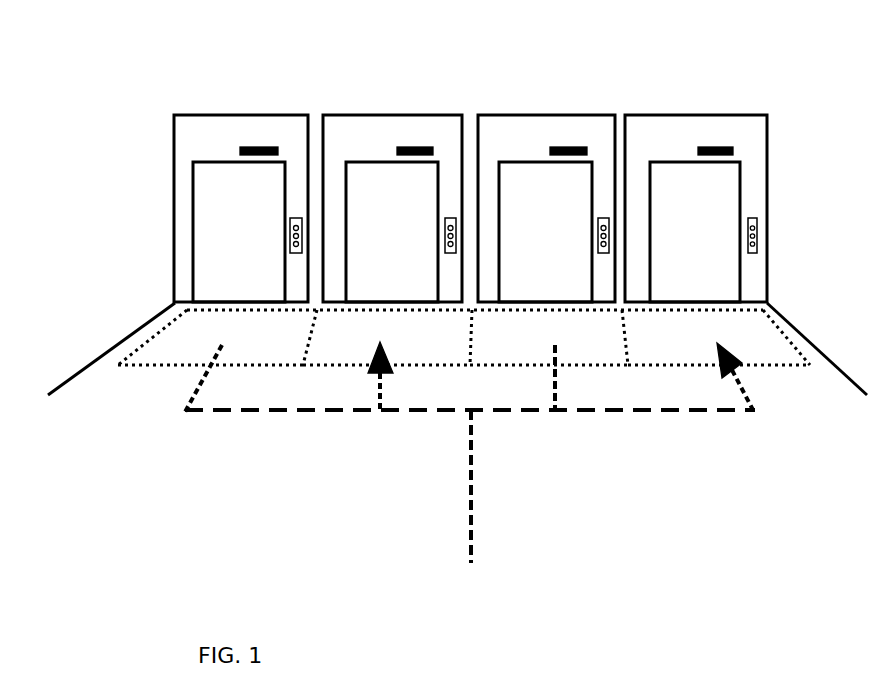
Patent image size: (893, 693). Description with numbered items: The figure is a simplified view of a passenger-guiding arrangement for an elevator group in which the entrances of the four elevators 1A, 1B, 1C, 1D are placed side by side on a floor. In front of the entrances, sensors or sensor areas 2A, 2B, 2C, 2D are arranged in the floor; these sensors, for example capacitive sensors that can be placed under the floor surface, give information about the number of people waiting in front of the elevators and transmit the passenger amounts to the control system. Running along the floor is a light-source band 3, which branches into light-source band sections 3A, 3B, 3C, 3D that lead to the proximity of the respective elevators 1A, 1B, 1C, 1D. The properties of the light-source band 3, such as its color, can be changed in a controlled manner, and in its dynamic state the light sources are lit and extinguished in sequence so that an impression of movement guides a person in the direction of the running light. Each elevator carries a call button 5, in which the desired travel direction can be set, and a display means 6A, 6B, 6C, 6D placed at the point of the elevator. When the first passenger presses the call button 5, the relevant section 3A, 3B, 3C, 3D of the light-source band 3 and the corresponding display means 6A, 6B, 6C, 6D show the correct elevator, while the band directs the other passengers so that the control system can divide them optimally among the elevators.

The elevator 1A is at (238, 178).
The elevator 1B is at (378, 170).
The elevator 1C is at (533, 172).
The elevator 1D is at (682, 172).
The sensor 2A is at (170, 357).
The sensor 2B is at (333, 357).
The sensor 2C is at (492, 355).
The sensor 2D is at (675, 355).
The light-source band 3 is at (471, 470).
The light-source band section 3A is at (203, 378).
The light-source band section 3B is at (382, 385).
The light-source band section 3C is at (560, 383).
The light-source band section 3D is at (745, 392).
The call button 5 is at (302, 248).
The display means 6A is at (257, 147).
The display means 6B is at (412, 147).
The display means 6C is at (567, 147).
The display means 6D is at (712, 147).